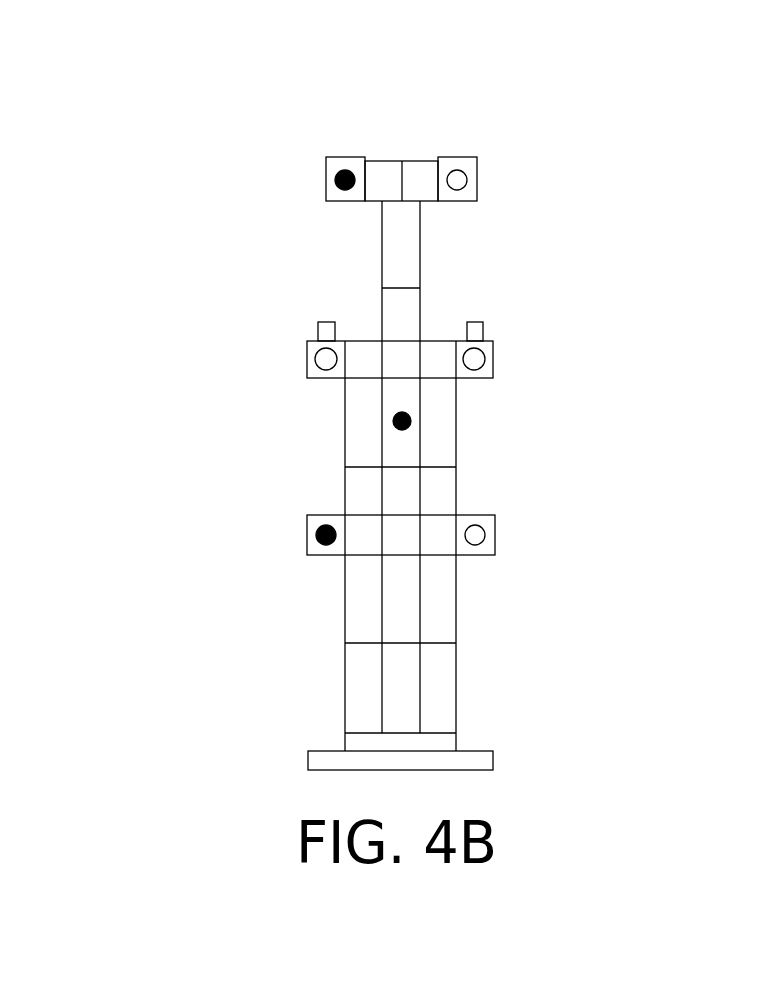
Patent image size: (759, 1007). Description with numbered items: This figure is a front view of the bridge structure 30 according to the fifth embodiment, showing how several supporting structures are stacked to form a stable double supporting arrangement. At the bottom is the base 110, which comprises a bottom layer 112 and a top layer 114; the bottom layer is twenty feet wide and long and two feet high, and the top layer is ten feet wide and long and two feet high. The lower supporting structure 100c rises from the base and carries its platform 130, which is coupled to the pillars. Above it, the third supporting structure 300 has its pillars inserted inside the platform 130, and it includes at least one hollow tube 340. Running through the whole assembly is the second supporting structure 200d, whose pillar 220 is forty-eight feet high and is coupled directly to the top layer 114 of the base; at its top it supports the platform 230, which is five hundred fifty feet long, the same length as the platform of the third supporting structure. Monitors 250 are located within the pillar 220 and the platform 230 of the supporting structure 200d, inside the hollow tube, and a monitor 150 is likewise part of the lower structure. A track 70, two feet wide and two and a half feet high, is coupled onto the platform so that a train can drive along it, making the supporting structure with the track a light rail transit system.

The bridge structure 30 is at (742, 711).
The supporting structure 200d is at (458, 383).
The platform 230 is at (378, 135).
The pillar 220 is at (441, 245).
The monitors 250 is at (343, 191).
The third supporting structure 300 is at (428, 369).
The hollow tube 340 is at (321, 358).
The track 70 is at (482, 330).
The supporting structure 100c is at (377, 563).
The platform 130 is at (413, 512).
The monitor 150 is at (318, 535).
The base 110 is at (298, 746).
The top layer 114 is at (355, 744).
The bottom layer 112 is at (310, 760).